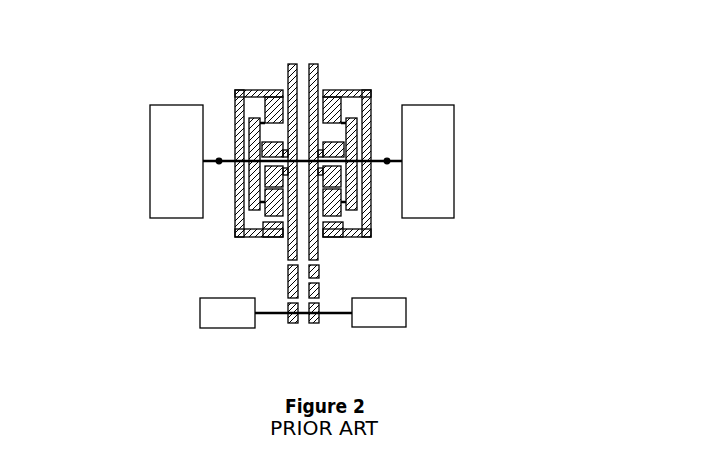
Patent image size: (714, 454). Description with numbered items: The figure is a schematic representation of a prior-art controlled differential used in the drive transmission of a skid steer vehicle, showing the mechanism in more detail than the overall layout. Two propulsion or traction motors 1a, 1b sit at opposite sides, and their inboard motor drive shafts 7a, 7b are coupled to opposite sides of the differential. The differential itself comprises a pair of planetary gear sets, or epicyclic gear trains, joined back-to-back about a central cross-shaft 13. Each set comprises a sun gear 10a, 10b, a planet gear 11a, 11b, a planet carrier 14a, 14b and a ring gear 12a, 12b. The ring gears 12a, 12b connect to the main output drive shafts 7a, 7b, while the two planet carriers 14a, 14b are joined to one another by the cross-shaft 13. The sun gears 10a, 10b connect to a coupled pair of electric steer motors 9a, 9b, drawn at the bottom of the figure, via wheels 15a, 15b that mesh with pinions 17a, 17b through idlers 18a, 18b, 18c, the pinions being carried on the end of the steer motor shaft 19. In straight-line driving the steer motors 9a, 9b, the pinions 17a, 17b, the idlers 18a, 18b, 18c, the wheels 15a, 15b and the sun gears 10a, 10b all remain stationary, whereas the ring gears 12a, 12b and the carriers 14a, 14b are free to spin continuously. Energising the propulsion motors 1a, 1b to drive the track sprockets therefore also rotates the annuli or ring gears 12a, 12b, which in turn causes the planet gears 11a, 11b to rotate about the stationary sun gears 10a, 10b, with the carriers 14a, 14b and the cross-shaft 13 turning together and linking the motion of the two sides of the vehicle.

The traction motor 1a is at (178, 172).
The traction motor 1b is at (437, 173).
The motor drive shaft 7a is at (219, 161).
The motor drive shaft 7b is at (387, 161).
The steer motor 9a is at (230, 320).
The steer motor 9b is at (383, 317).
The sun gear 10a is at (270, 148).
The sun gear 10b is at (337, 150).
The planet gear 11a is at (268, 208).
The planet gear 11b is at (338, 205).
The ring gear 12a is at (238, 209).
The ring gear 12b is at (367, 203).
The cross-shaft 13 is at (303, 159).
The planet carrier 14a is at (251, 143).
The planet carrier 14b is at (352, 140).
The wheel 15a is at (291, 243).
The wheel 15b is at (313, 233).
The pinion 17a is at (293, 313).
The pinion 17b is at (312, 313).
The idler 18a is at (291, 283).
The idler 18b is at (313, 272).
The idler 18c is at (313, 292).
The steer motor shaft 19 is at (329, 313).